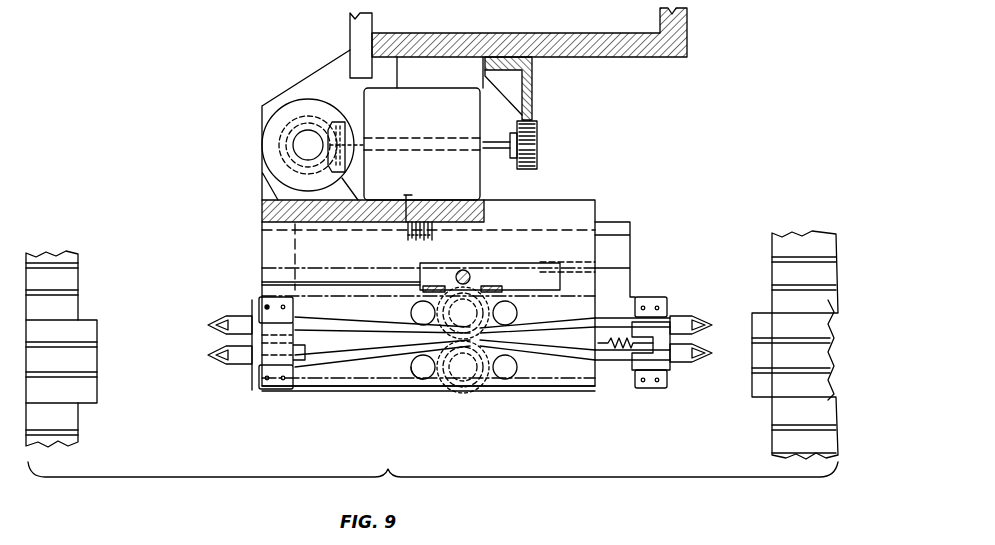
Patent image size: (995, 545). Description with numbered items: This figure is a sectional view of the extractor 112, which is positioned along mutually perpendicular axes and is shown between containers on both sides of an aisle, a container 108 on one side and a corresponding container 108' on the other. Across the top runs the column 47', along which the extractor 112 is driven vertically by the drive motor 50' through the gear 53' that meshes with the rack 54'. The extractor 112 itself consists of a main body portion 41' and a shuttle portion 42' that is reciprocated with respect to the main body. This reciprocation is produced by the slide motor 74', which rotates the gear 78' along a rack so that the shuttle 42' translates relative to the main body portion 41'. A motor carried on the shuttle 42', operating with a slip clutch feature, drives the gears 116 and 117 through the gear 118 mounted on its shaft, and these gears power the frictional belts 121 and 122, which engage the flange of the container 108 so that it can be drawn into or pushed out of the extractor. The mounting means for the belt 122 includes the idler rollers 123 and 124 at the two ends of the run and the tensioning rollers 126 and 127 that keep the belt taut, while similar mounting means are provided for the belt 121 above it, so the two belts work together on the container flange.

The column 47' is at (518, 53).
The rack 54' is at (531, 88).
The gear 53' is at (532, 145).
The slide motor 74' is at (422, 144).
The drive motor 50' is at (310, 125).
The extractor 112 is at (258, 222).
The main body portion 41' is at (464, 277).
The shuttle portion 42' is at (437, 411).
The gear 78' is at (396, 225).
The gear 118 is at (472, 266).
The gear 117 is at (467, 376).
The frictional belt 121 is at (382, 318).
The gear 116 is at (510, 298).
The frictional belt 122 is at (402, 358).
The tensioning roller 126 is at (422, 376).
The tensioning roller 127 is at (509, 376).
The idler roller 123 is at (230, 370).
The idler roller 124 is at (707, 360).
The left coil stack 108' is at (96, 349).
The container 108 is at (771, 345).